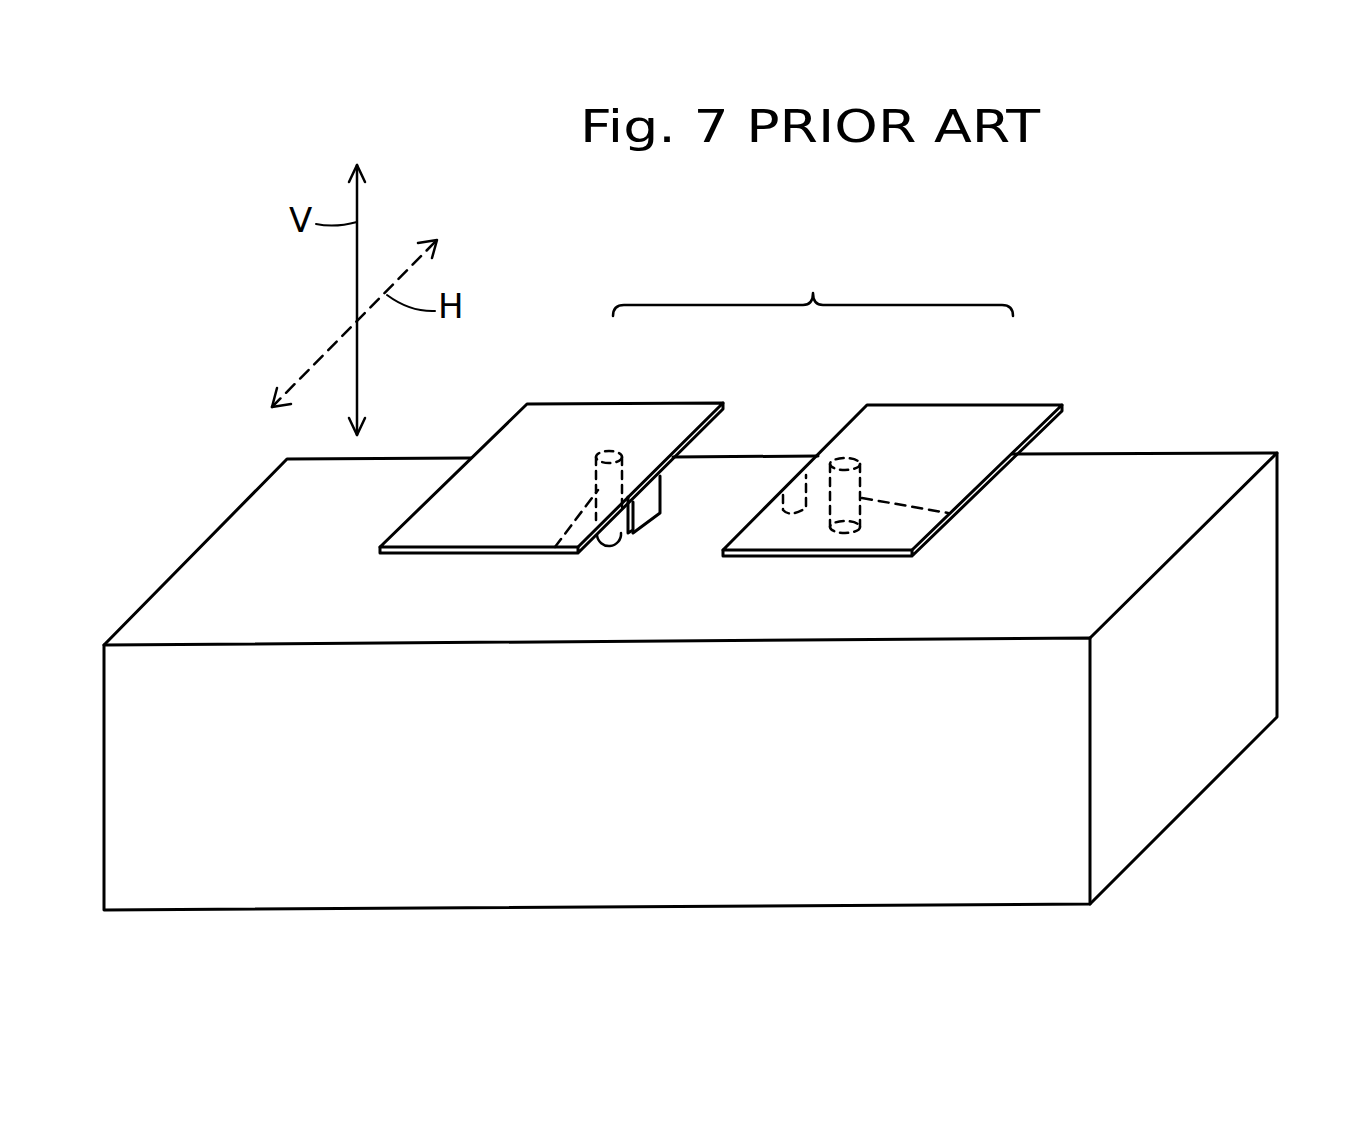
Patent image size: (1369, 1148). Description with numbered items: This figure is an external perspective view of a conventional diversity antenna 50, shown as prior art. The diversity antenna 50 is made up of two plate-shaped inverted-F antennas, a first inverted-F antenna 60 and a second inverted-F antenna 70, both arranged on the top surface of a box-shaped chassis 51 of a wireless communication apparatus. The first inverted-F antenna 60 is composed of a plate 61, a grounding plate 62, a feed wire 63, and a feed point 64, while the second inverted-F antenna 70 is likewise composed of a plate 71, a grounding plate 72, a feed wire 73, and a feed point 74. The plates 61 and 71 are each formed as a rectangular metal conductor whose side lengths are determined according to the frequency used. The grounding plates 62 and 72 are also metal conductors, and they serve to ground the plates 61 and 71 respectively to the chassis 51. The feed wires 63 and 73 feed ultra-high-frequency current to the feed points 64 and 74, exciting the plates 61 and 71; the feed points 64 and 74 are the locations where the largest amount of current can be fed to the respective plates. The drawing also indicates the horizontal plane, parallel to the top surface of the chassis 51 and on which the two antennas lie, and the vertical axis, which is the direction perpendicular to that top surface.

The diversity antenna 50 is at (813, 281).
The chassis 51 is at (1277, 584).
The plate-shaped inverted-F antenna 60 is at (563, 465).
The plate 61 is at (513, 438).
The grounding plate 62 is at (647, 512).
The feed wire 63 is at (537, 562).
The feed point 64 is at (612, 462).
The plate-shaped inverted-F antenna 70 is at (910, 435).
The plate 71 is at (1050, 372).
The grounding plate 72 is at (772, 503).
The feed wire 73 is at (961, 519).
The feed point 74 is at (847, 465).